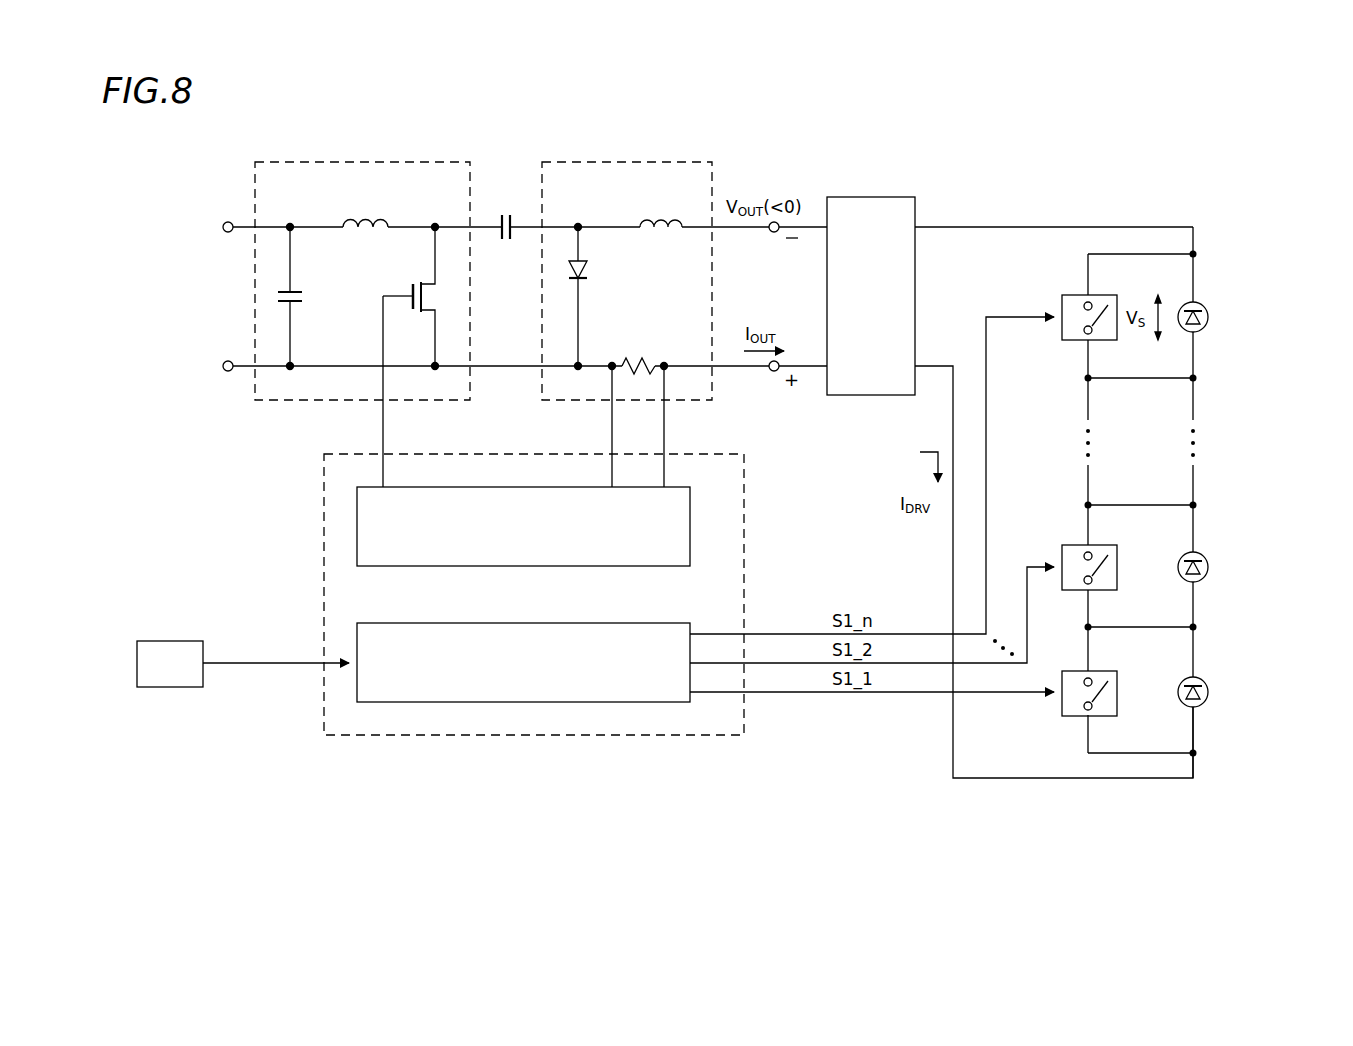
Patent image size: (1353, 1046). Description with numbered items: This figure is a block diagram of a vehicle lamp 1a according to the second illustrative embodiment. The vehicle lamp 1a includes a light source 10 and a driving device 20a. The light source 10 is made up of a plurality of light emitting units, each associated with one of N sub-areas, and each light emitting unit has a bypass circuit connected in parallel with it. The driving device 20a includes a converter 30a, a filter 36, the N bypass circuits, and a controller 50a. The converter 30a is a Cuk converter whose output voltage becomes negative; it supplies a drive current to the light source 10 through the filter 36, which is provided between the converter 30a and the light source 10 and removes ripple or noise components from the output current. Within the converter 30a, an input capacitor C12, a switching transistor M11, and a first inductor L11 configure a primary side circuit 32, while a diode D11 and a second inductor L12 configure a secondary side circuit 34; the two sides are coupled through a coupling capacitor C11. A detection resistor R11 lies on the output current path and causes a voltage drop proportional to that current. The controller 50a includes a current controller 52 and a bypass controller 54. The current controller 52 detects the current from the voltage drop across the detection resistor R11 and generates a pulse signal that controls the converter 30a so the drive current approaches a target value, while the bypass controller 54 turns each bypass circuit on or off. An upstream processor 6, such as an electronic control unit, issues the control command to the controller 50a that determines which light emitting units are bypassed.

The vehicle lamp 1a is at (1213, 77).
The processor 6 is at (177, 641).
The light source 10 is at (1280, 288).
The driving device 20a is at (1146, 792).
The converter 30a is at (597, 118).
The primary side circuit 32 is at (437, 162).
The secondary side circuit 34 is at (578, 162).
The filter 36 is at (880, 197).
The controller 50a is at (744, 720).
The current controller 52 is at (678, 481).
The bypass controller 54 is at (678, 618).
The first inductor L11 is at (365, 221).
The second inductor L12 is at (660, 221).
The coupling capacitor C11 is at (506, 244).
The input capacitor C12 is at (306, 296).
The diode D11 is at (590, 273).
The switching transistor M11 is at (417, 316).
The detection resistor R11 is at (639, 362).